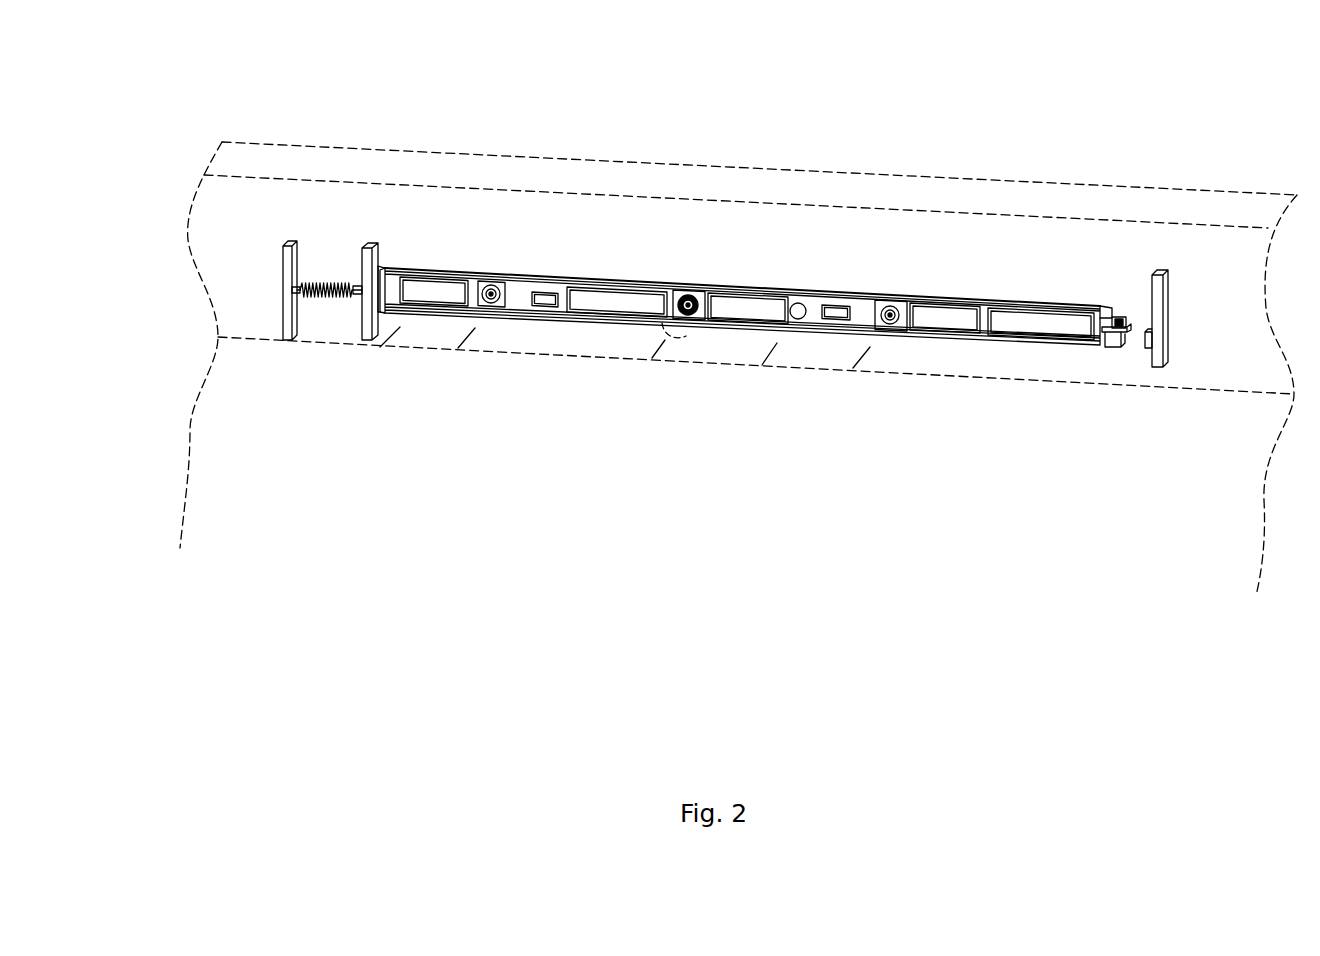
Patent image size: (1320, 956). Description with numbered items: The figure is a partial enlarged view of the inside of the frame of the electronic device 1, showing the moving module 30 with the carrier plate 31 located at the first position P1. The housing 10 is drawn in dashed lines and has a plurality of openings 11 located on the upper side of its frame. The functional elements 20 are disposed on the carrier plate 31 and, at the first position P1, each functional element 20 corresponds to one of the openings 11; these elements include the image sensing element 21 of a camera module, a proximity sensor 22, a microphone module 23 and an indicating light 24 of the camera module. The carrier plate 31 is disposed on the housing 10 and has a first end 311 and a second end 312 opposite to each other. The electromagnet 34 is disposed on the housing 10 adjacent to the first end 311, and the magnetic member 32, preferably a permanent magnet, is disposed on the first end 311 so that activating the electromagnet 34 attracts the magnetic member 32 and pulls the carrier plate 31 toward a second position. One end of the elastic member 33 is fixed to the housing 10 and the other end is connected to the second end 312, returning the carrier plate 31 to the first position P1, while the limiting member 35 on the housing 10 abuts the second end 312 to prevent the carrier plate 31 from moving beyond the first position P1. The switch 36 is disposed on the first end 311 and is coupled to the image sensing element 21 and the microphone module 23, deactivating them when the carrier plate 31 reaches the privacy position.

The electronic device 1 is at (180, 102).
The housing 10 is at (222, 160).
The openings 11 is at (472, 320).
The functional elements 20 is at (942, 139).
The image sensing element 21 is at (687, 290).
The proximity sensor 22 is at (433, 285).
The microphone module 23 is at (492, 283).
The indicating light 24 is at (798, 300).
The moving module 30 is at (313, 230).
The carrier plate 31 is at (1033, 303).
The first end 311 is at (1112, 318).
The second end 312 is at (380, 270).
The magnetic member 32 is at (1114, 347).
The elastic member 33 is at (326, 297).
The electromagnet 34 is at (1149, 348).
The limiting member 35 is at (367, 318).
The switch 36 is at (1127, 327).
The first position P1 is at (1070, 155).